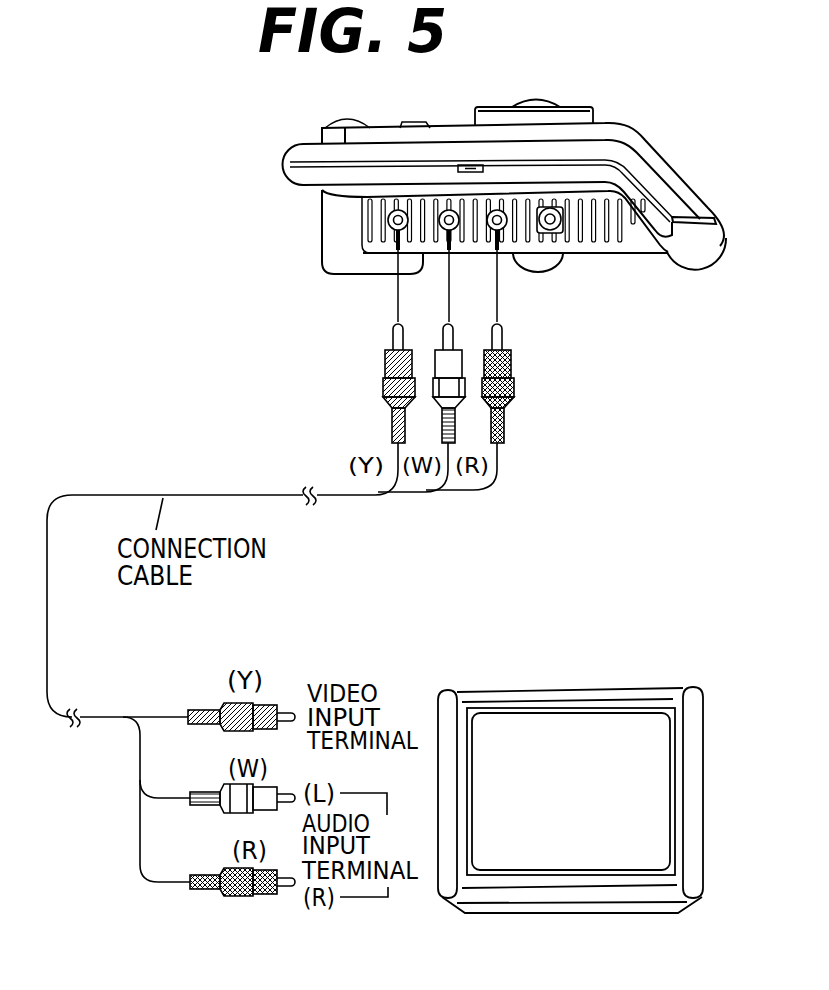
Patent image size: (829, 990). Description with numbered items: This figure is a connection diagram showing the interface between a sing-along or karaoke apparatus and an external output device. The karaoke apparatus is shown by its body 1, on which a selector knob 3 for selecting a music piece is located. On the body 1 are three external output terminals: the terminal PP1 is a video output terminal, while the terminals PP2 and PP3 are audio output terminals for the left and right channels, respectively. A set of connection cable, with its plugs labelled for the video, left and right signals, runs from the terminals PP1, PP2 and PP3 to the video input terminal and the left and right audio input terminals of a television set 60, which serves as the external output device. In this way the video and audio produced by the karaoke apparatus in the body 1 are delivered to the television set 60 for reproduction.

The body 1 is at (677, 180).
The selector knob 3 is at (597, 115).
The video output terminal PP1 is at (388, 232).
The audio output terminal PP2 is at (438, 230).
The audio output terminal PP3 is at (504, 231).
The television set 60 is at (635, 688).